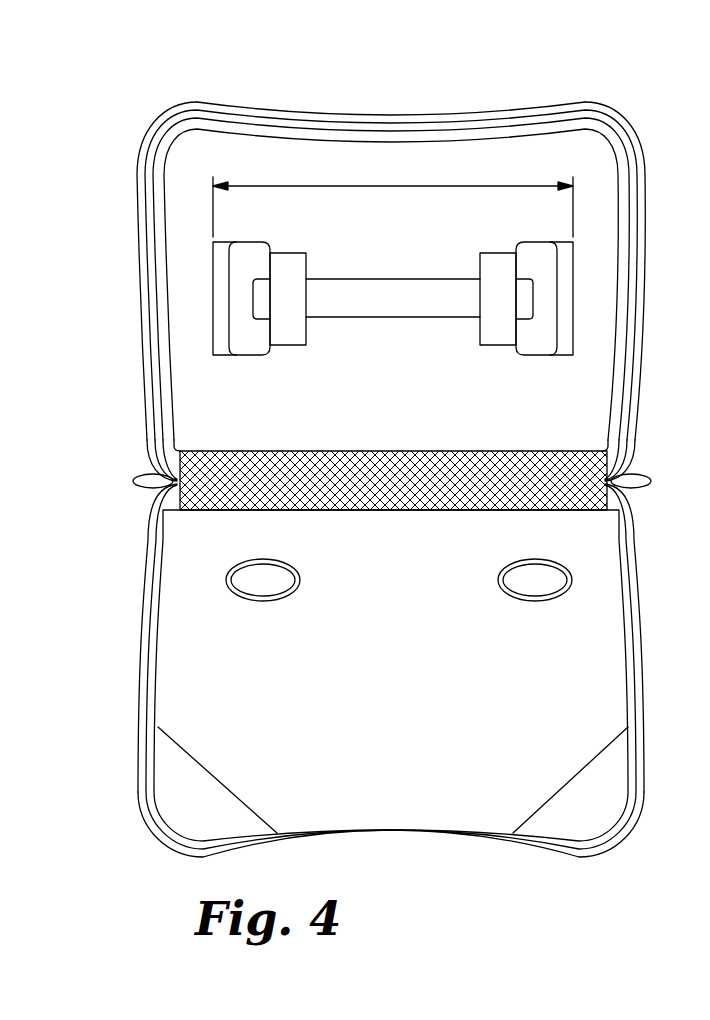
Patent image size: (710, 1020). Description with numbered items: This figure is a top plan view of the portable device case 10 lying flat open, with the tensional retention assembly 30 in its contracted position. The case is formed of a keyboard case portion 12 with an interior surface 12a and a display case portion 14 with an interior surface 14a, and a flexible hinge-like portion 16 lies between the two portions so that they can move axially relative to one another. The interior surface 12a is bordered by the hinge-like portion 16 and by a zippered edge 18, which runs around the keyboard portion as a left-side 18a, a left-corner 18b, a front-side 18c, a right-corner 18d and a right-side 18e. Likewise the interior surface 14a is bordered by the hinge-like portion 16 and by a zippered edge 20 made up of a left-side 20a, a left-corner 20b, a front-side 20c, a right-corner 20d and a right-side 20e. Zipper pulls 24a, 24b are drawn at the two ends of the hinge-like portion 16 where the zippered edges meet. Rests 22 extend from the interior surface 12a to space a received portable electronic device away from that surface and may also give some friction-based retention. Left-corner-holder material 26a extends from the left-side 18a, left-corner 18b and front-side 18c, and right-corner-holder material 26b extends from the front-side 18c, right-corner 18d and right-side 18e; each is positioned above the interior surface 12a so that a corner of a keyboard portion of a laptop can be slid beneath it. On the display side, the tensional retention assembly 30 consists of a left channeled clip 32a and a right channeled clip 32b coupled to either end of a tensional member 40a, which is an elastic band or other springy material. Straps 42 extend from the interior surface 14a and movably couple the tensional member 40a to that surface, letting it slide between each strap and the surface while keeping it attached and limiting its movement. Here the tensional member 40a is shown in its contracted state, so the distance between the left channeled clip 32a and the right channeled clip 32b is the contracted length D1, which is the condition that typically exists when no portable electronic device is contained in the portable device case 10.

The portable device case 10 is at (229, 76).
The keyboard case portion 12 is at (391, 708).
The interior surface of keyboard case portion 12a is at (405, 724).
The display case portion 14 is at (392, 257).
The interior surface of display case portion 14a is at (378, 401).
The hinge-like portion 16 is at (370, 510).
The zippered edge 18 is at (391, 691).
The left-side of zippered edge 18a is at (148, 606).
The left-corner of zippered edge 18b is at (153, 836).
The front-side of zippered edge 18c is at (393, 838).
The right-corner of zippered edge 18d is at (632, 836).
The right-side of zippered edge 18e is at (644, 646).
The zippered edge 20 is at (392, 270).
The left-side of zippered edge 20a is at (152, 323).
The left-corner of zippered edge 20b is at (156, 126).
The front-side of zippered edge 20c is at (418, 120).
The right-corner of zippered edge 20d is at (632, 131).
The right-side of zippered edge 20e is at (640, 318).
The rests 22 is at (266, 602).
The zipper pull 24a is at (134, 478).
The zipper pull 24b is at (651, 480).
The left-corner-holder material 26a is at (230, 782).
The right-corner-holder material 26b is at (568, 772).
The tensional retention assembly 30 is at (395, 336).
The left channeled clip 32a is at (236, 378).
The right channeled clip 32b is at (548, 378).
The tensional member 40a is at (415, 280).
The straps 42 is at (290, 342).
The contracted length D1 is at (393, 200).